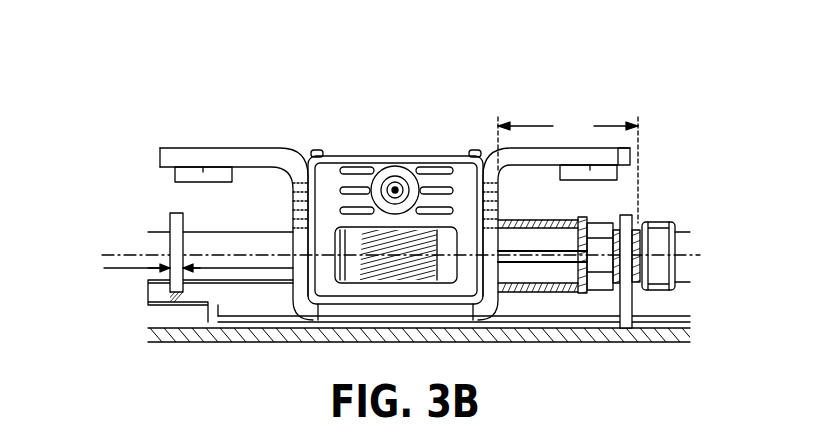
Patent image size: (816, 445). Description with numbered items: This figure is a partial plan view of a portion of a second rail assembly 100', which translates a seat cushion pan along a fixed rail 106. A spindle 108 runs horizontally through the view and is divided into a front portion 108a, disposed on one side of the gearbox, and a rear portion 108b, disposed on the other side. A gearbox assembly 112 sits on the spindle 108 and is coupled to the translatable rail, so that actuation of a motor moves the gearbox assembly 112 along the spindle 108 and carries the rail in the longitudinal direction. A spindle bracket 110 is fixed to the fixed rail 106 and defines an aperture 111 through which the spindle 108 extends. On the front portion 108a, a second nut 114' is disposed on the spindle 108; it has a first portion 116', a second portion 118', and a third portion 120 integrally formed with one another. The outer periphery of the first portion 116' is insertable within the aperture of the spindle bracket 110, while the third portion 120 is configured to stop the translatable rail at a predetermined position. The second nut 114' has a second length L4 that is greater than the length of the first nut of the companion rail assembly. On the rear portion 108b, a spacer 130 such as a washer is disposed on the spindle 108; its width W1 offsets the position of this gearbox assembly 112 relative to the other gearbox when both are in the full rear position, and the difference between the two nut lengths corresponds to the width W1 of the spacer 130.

The second rail assembly 100' is at (401, 127).
The fixed rail 106 is at (603, 337).
The spindle 108 is at (257, 272).
The front portion 108a is at (500, 92).
The rear portion 108b is at (305, 92).
The spindle bracket 110 is at (627, 310).
The aperture 111 is at (632, 295).
The gearbox assembly 112 is at (280, 144).
The second nut 114' is at (599, 223).
The first portion 116' is at (688, 256).
The second portion 118' is at (646, 236).
The third portion 120 is at (535, 275).
The spacer 130 is at (170, 220).
The width W1 is at (128, 268).
The second length L4 is at (568, 167).